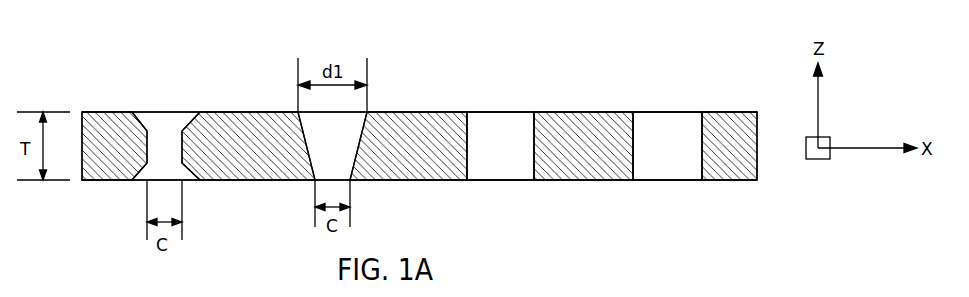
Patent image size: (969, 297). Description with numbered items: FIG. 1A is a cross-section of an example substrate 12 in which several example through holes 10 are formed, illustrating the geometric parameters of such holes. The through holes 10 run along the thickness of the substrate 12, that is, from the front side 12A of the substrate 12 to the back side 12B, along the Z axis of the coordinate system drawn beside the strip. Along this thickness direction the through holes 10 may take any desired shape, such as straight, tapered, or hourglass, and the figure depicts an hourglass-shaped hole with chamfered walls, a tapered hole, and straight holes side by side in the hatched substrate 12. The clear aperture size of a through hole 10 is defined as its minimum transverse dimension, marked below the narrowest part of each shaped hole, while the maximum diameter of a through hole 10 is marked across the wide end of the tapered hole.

The through hole 10 is at (158, 125).
The substrate 12 is at (588, 100).
The front side 12A is at (733, 112).
The back side 12B is at (731, 180).